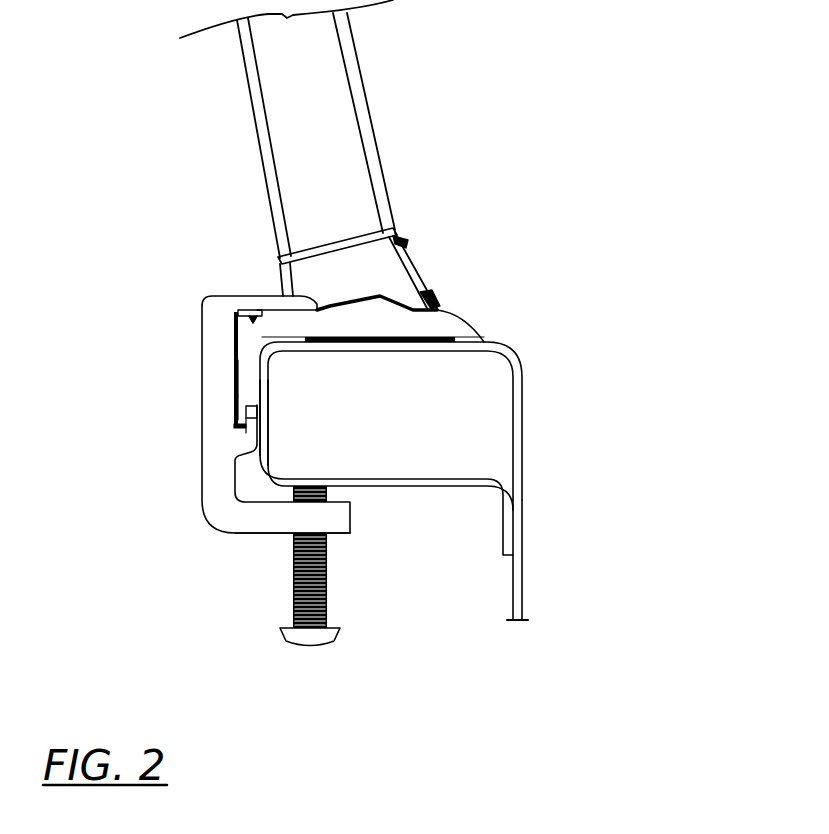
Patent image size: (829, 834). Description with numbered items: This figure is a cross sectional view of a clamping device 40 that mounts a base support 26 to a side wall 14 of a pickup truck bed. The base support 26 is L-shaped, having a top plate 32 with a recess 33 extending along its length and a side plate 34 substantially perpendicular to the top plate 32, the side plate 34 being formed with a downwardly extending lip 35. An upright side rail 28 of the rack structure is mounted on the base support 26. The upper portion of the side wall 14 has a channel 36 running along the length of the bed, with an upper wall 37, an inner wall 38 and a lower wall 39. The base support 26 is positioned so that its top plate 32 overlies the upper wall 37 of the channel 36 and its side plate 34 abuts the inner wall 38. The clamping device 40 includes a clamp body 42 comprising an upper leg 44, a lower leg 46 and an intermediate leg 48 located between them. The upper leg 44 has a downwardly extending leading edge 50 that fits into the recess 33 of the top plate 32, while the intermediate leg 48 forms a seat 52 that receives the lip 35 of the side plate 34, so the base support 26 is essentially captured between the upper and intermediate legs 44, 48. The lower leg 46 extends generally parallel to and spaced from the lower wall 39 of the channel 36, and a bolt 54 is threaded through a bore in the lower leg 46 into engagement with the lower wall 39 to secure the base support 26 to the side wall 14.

The side wall 14 is at (532, 605).
The base support 26 is at (488, 327).
The side rail 28 is at (363, 97).
The top plate 32 is at (436, 331).
The recess 33 is at (240, 343).
The side plate 34 is at (237, 381).
The lip 35 is at (237, 403).
The channel 36 is at (529, 443).
The upper wall 37 is at (385, 352).
The inner wall 38 is at (270, 428).
The lower wall 39 is at (407, 477).
The clamping device 40 is at (157, 301).
The clamp body 42 is at (193, 502).
The upper leg 44 is at (243, 296).
The lower leg 46 is at (260, 538).
The intermediate leg 48 is at (258, 418).
The leading edge 50 is at (248, 318).
The seat 52 is at (245, 427).
The bolt 54 is at (328, 588).